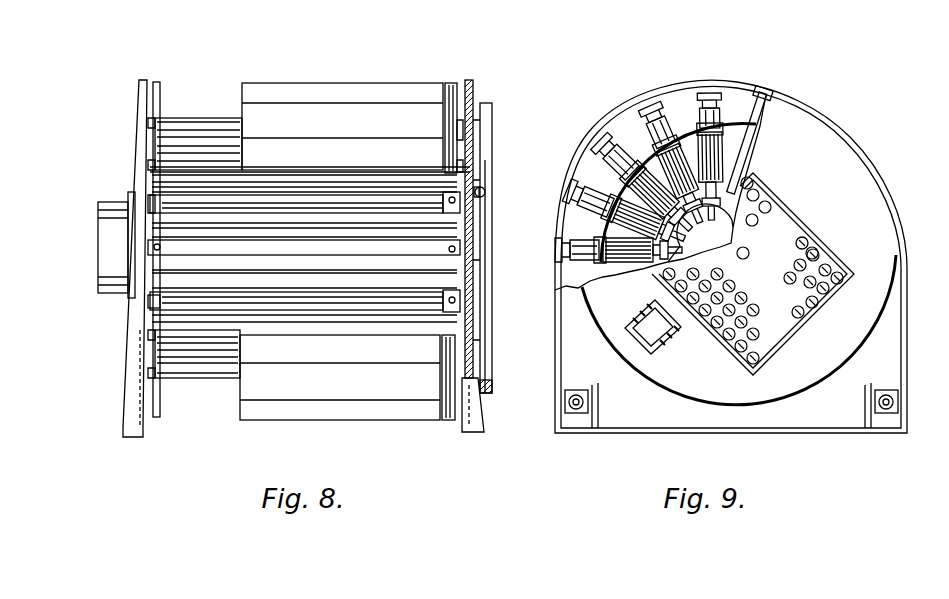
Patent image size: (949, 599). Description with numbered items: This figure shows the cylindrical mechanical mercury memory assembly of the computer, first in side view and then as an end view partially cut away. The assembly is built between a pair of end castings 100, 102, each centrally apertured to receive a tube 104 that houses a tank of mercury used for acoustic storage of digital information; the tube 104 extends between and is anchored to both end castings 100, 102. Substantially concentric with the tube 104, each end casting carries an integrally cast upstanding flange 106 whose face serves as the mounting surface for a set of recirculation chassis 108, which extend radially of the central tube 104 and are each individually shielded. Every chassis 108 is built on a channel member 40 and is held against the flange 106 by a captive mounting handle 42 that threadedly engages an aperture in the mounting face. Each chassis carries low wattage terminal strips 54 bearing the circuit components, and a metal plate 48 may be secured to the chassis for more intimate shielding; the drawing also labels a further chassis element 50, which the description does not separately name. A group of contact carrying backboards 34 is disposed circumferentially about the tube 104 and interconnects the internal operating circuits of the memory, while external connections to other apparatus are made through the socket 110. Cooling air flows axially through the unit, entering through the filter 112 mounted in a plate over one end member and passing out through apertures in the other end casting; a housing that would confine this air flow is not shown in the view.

In FIG. 9, the contact carrying backboard 34 is at (682, 242).
In FIG. 8, the channel member 40 is at (202, 122).
In FIG. 9, the channel member 40 is at (707, 115).
In FIG. 8, the mounting handle 42 is at (163, 103).
In FIG. 9, the mounting handle 42 is at (710, 90).
In FIG. 9, the metal plate 48 is at (727, 152).
In FIG. 8, the cylinder housing 50 is at (342, 123).
In FIG. 9, the cylinder housing 50 is at (709, 125).
In FIG. 9, the low wattage terminal strip 54 is at (630, 187).
In FIG. 8, the end casting 100 is at (128, 405).
In FIG. 8, the end casting 102 is at (470, 433).
In FIG. 9, the end casting 102 is at (823, 426).
In FIG. 8, the tube 104 is at (118, 246).
In FIG. 9, the tube 104 is at (727, 208).
In FIG. 8, the upstanding flange 106 is at (130, 293).
In FIG. 9, the upstanding flange 106 is at (650, 152).
In FIG. 9, the recirculation chassis 108 is at (678, 135).
In FIG. 9, the socket 110 is at (590, 403).
In FIG. 8, the filter 112 is at (488, 193).
In FIG. 9, the filter 112 is at (805, 239).